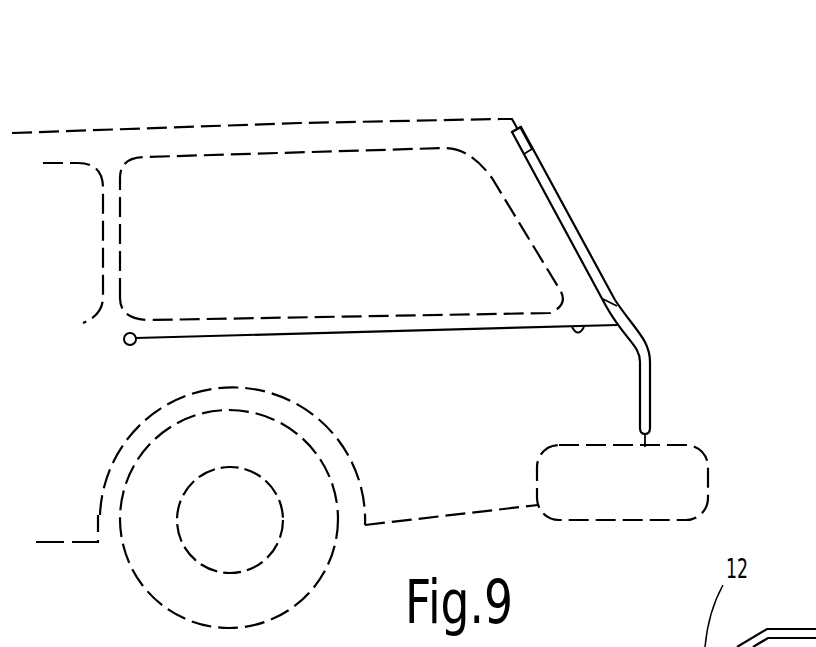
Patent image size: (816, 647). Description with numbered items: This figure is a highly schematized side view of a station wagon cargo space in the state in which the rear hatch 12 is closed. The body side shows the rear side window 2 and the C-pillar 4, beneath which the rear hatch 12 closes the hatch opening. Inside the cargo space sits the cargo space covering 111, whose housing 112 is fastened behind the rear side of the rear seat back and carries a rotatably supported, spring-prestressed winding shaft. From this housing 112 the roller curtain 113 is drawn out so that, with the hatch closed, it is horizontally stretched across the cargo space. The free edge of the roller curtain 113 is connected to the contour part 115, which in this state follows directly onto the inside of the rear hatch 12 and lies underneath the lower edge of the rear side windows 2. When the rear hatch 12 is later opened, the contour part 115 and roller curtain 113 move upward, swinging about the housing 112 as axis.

The rear side window 2 is at (256, 270).
The C-pillar 4 is at (512, 170).
The rear hatch 12 is at (628, 337).
The cargo space covering 111 is at (405, 362).
The housing 112 is at (126, 345).
The roller curtain 113 is at (323, 337).
The contour part 115 is at (601, 340).